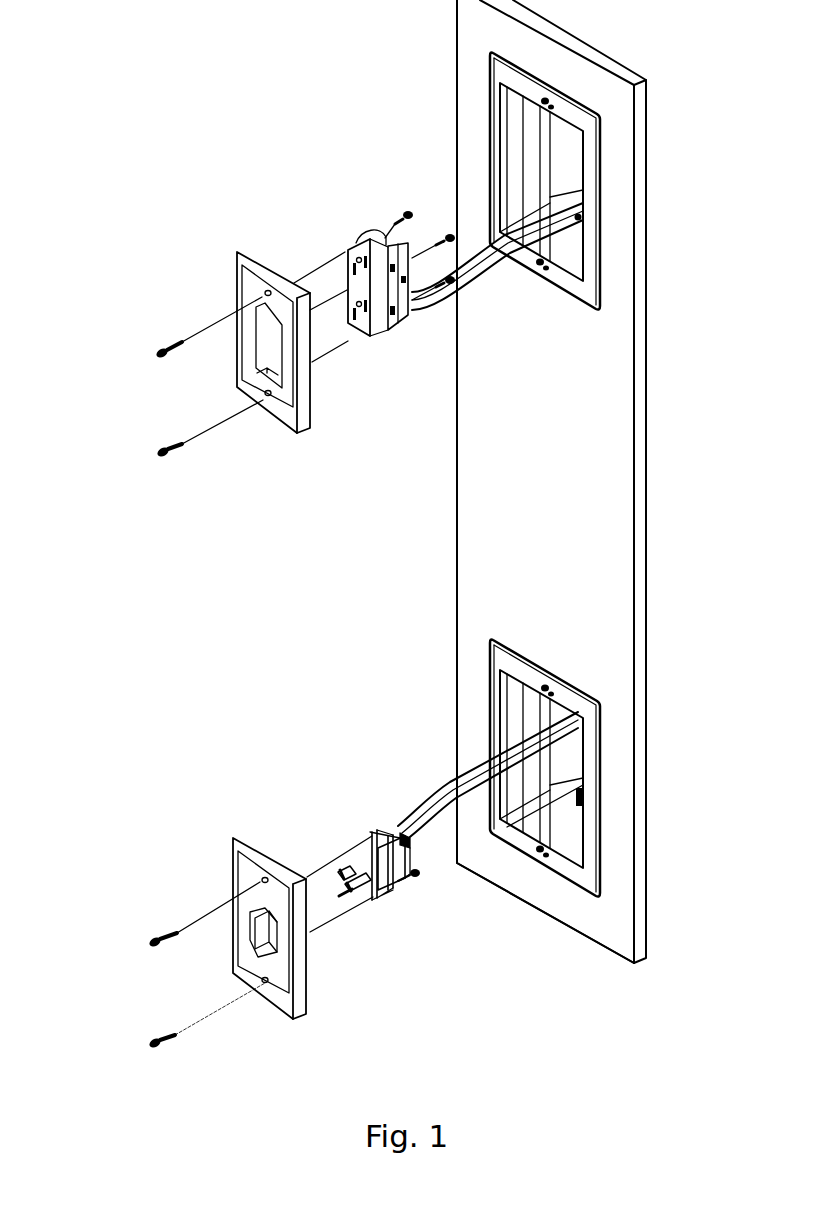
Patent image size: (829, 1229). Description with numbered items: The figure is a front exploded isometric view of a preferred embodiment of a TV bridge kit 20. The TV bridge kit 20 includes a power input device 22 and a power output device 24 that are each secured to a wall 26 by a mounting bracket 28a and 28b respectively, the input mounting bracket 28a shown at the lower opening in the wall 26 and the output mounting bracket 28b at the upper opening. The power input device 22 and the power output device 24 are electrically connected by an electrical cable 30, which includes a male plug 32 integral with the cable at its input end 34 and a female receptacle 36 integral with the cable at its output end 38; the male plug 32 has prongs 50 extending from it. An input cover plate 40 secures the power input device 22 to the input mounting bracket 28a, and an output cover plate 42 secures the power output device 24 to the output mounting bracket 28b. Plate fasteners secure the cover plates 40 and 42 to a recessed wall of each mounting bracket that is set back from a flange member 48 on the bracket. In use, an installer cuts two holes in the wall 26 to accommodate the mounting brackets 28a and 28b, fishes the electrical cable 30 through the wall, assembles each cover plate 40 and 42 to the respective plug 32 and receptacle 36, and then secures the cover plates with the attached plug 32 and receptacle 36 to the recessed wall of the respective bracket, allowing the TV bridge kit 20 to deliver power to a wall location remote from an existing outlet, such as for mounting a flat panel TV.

The TV bridge kit 20 is at (104, 182).
The power input device 22 is at (252, 789).
The power output device 24 is at (249, 210).
The wall 26 is at (558, 492).
The input mounting bracket 28a is at (602, 745).
The output mounting bracket 28b is at (605, 176).
The electrical cable 30 is at (480, 284).
The male plug 32 is at (390, 897).
The input end 34 is at (410, 852).
The female receptacle 36 is at (379, 337).
The output end 38 is at (413, 317).
The input cover plate 40 is at (313, 985).
The output cover plate 42 is at (315, 400).
The flange member 48 is at (565, 868).
The prongs 50 is at (348, 862).